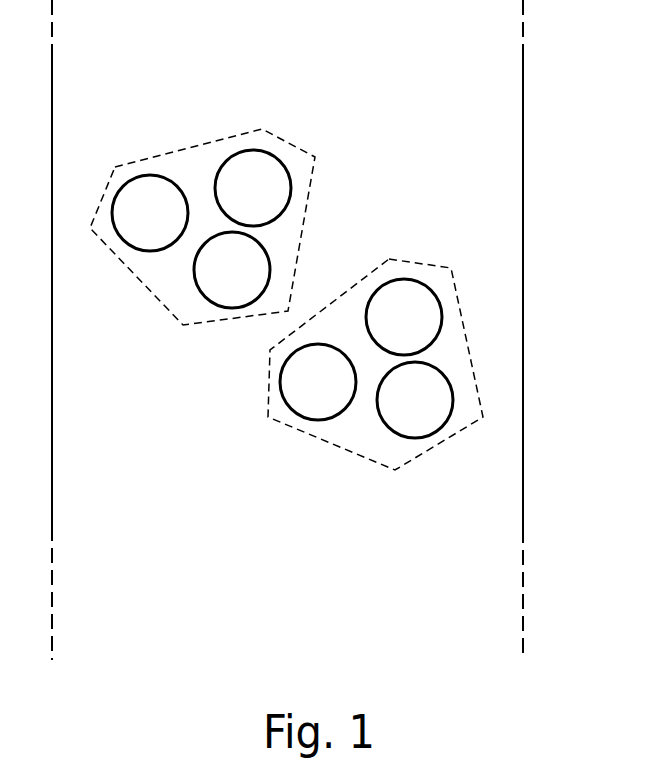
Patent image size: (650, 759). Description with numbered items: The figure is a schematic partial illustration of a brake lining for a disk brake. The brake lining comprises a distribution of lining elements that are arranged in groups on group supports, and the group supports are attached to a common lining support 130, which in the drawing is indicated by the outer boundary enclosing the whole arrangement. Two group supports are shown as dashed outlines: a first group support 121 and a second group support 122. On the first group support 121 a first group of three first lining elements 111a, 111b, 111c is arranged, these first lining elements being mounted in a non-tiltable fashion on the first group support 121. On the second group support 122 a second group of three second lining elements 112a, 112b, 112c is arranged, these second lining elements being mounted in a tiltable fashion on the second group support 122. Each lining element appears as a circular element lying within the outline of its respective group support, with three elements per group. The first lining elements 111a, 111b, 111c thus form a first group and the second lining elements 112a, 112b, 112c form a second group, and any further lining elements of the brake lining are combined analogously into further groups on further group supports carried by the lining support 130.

The lining support 130 is at (137, 570).
The first group support 121 is at (287, 229).
The second group support 122 is at (457, 352).
The lining element 111a is at (153, 193).
The lining element 111b is at (263, 190).
The lining element 111c is at (229, 297).
The lining element 112a is at (405, 298).
The lining element 112b is at (425, 423).
The lining element 112c is at (318, 395).